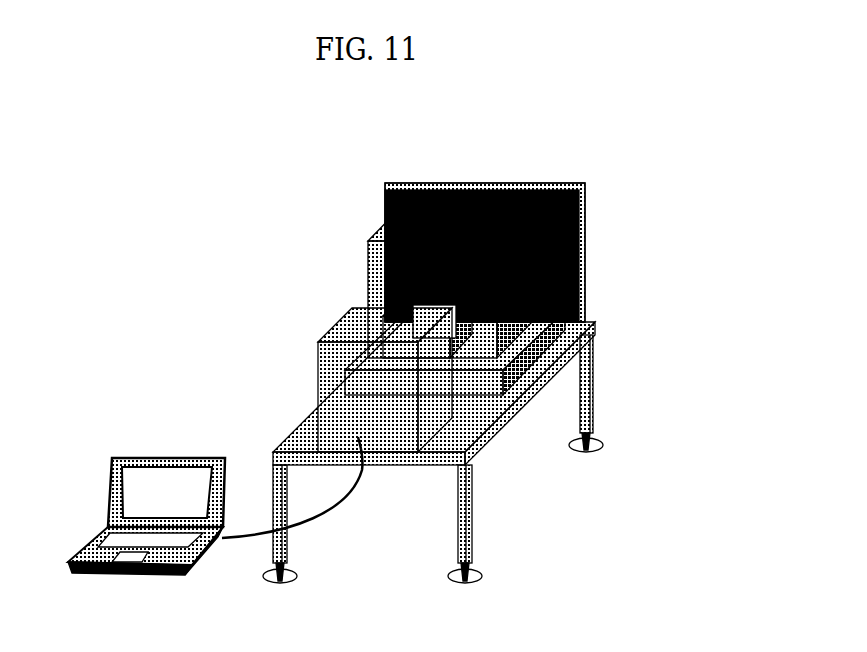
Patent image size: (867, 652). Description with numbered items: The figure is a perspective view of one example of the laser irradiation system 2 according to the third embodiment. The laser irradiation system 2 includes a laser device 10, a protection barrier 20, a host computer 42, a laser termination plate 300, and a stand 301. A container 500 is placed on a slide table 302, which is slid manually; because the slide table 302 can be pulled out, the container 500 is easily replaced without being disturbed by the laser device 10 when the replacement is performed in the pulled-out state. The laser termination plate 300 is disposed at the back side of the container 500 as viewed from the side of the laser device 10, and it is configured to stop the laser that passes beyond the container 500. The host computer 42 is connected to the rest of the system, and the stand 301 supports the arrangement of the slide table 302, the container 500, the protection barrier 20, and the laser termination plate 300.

The laser irradiation system 2 is at (70, 182).
The laser device 10 is at (333, 370).
The protection barrier 20 is at (397, 306).
The host computer 42 is at (97, 520).
The laser termination plate 300 is at (500, 197).
The stand 301 is at (535, 390).
The slide table 302 is at (590, 340).
The container 500 is at (377, 238).